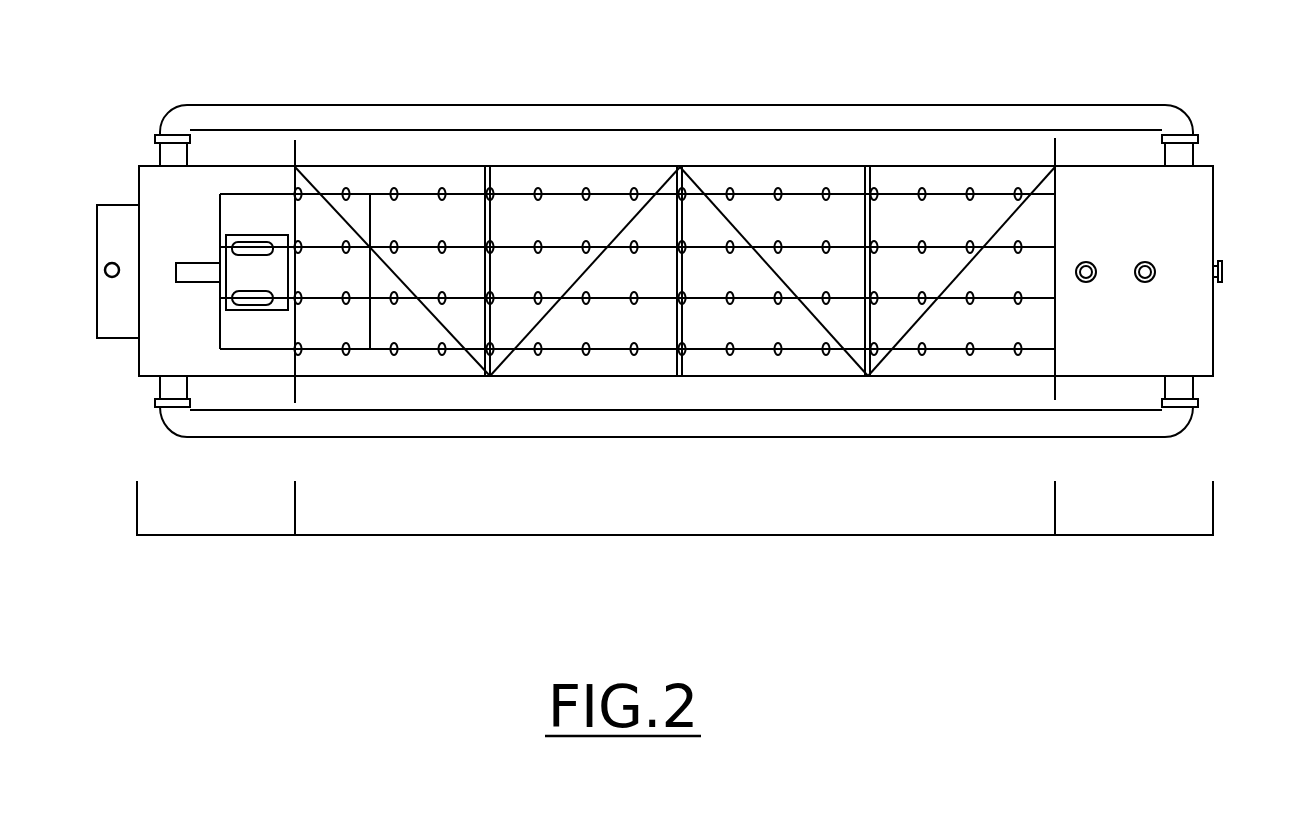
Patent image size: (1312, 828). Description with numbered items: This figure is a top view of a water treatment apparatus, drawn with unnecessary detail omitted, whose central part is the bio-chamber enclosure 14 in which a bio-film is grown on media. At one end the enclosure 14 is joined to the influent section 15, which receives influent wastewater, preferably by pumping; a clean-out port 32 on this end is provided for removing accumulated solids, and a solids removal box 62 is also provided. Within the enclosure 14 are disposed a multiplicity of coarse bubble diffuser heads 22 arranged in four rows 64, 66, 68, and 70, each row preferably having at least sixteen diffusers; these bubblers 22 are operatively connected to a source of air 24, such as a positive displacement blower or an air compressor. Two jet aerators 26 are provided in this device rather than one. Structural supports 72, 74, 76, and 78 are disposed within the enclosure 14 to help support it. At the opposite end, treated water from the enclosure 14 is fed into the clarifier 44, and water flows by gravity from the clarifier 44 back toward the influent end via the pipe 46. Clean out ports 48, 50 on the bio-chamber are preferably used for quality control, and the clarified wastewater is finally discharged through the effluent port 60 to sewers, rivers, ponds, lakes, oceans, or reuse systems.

The enclosure 14 is at (797, 535).
The influent section 15 is at (257, 535).
The coarse bubble diffuser heads 22 is at (822, 192).
The source of air 24 is at (205, 262).
The jet aerators 26 is at (262, 303).
The clean-out port 32 is at (102, 262).
The clarifier 44 is at (1117, 535).
The pipe 46 is at (872, 103).
The clean out port 48 is at (1088, 287).
The clean out port 50 is at (1146, 287).
The effluent port 60 is at (1224, 272).
The solids removal box 62 is at (108, 310).
The row of bubble diffusers 64 is at (427, 346).
The row of bubble diffusers 66 is at (428, 297).
The row of bubble diffusers 68 is at (410, 245).
The row of bubble diffusers 70 is at (378, 194).
The structural support 72 is at (630, 213).
The structural support 74 is at (490, 228).
The structural support 76 is at (737, 227).
The structural support 78 is at (873, 220).